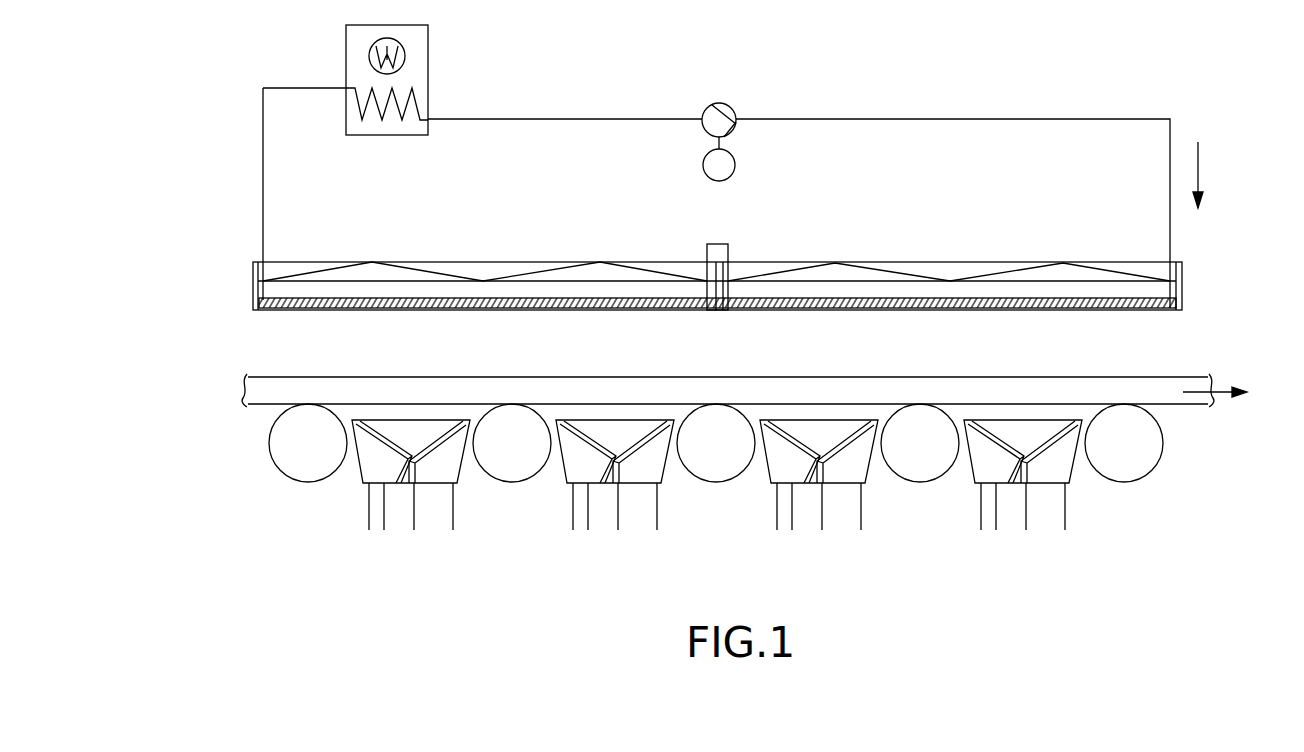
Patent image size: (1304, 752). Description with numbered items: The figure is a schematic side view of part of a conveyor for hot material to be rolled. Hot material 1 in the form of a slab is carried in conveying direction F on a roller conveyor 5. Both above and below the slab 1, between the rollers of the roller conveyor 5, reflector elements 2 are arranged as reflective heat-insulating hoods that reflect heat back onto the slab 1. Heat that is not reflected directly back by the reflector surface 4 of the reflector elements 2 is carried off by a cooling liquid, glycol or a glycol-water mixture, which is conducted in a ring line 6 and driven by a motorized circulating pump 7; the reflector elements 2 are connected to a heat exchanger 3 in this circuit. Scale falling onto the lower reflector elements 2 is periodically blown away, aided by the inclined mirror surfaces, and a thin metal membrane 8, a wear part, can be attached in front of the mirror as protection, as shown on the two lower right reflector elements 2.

The hot material 1 is at (282, 393).
The reflector elements 2 is at (447, 430).
The heat exchanger 3 is at (420, 66).
The reflector surface 4 is at (550, 308).
The roller conveyor 5 is at (720, 540).
The ring line 6 is at (838, 114).
The motorized circulating pump 7 is at (722, 103).
The thin metal membrane 8 is at (800, 450).